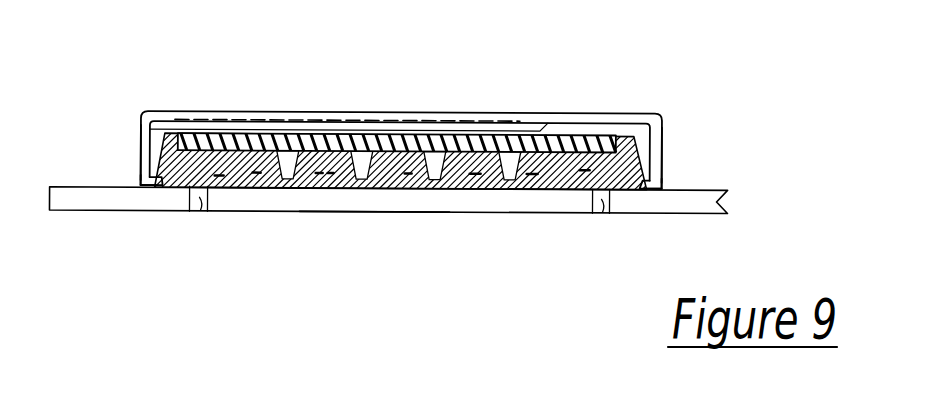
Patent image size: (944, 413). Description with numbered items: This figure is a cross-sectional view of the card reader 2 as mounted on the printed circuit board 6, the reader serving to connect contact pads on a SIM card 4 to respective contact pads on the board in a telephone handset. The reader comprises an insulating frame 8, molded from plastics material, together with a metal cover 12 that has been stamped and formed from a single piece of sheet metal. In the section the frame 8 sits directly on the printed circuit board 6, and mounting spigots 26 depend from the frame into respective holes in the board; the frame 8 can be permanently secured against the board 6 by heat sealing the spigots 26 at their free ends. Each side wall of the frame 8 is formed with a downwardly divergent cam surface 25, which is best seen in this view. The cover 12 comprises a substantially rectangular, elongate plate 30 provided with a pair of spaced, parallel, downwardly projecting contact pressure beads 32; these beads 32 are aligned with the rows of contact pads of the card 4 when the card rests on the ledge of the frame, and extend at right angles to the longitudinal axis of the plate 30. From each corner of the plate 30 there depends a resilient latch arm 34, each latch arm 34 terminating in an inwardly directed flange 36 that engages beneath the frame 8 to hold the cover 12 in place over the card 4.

The card reader 2 is at (718, 65).
The SIM card 4 is at (203, 139).
The printed circuit board 6 is at (707, 200).
The insulating frame 8 is at (368, 206).
The metal cover 12 is at (601, 102).
The cam surface 25 is at (155, 142).
The mounting spigot 26 is at (200, 213).
The plate 30 is at (228, 111).
The contact pressure bead 32 is at (495, 134).
The resilient latch arm 34 is at (141, 136).
The flange 36 is at (153, 188).